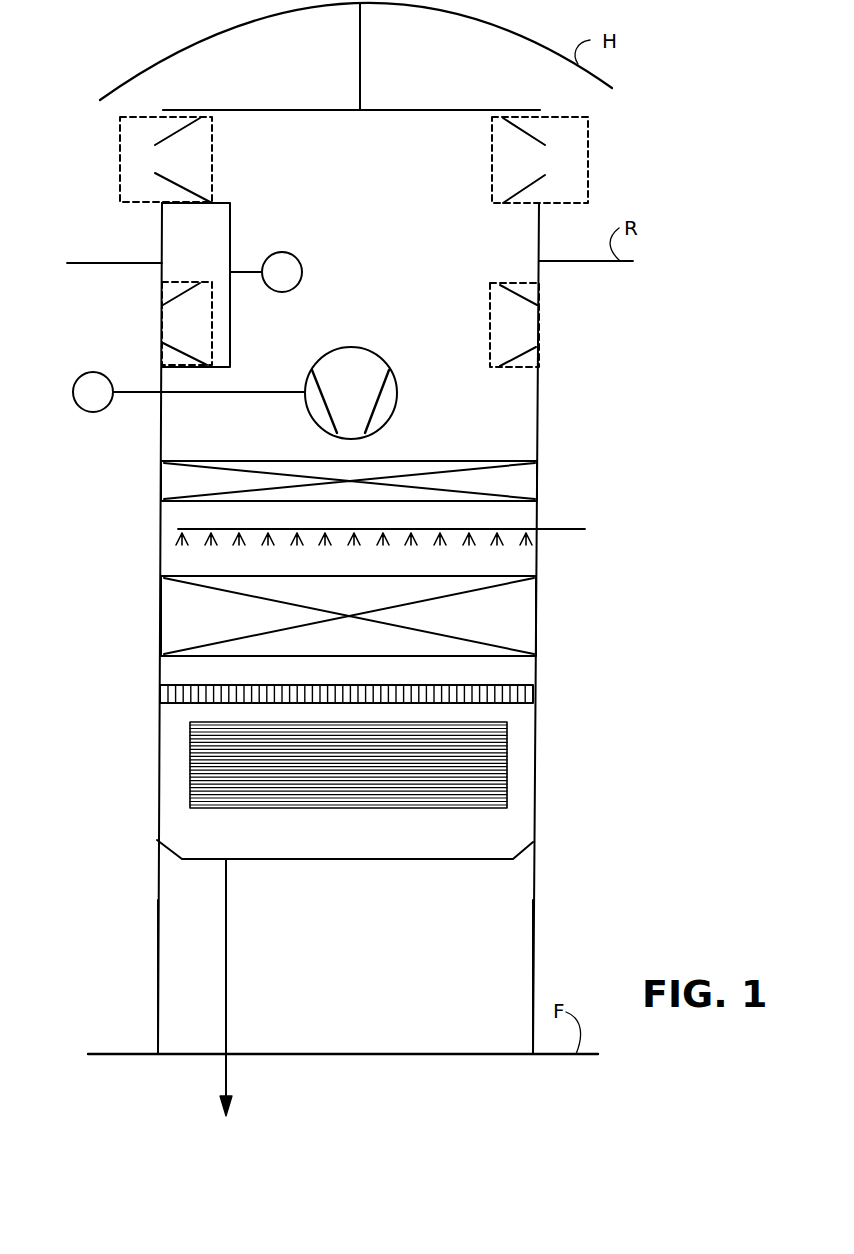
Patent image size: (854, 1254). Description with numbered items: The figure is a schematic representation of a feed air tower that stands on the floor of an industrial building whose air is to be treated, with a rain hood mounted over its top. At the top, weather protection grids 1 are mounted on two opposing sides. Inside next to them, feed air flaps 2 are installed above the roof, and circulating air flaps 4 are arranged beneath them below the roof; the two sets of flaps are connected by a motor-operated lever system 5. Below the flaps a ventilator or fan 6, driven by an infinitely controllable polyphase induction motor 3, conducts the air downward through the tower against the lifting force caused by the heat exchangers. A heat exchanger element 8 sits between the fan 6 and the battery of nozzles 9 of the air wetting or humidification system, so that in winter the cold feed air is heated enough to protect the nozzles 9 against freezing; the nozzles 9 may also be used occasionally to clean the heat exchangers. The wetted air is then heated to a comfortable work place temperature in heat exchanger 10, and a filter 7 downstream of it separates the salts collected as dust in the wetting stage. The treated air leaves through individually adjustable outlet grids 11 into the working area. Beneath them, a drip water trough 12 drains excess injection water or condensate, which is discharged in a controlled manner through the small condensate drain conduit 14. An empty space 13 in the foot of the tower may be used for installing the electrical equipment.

The weather protection grids 1 is at (588, 160).
The feed air flaps 2 is at (540, 177).
The polyphase induction motor 3 is at (80, 380).
The circulating air flaps 4 is at (525, 350).
The lever system 5 is at (230, 258).
The ventilator or fan 6 is at (397, 395).
The filter 7 is at (175, 693).
The heat exchanger element 8 is at (523, 483).
The battery of nozzles of the air wetting system 9 is at (545, 531).
The heat exchanger 10 is at (522, 628).
The outlet grids 11 is at (497, 757).
The drip water trough 12 is at (520, 861).
The empty space 13 is at (476, 960).
The condensate drain conduit 14 is at (224, 1066).